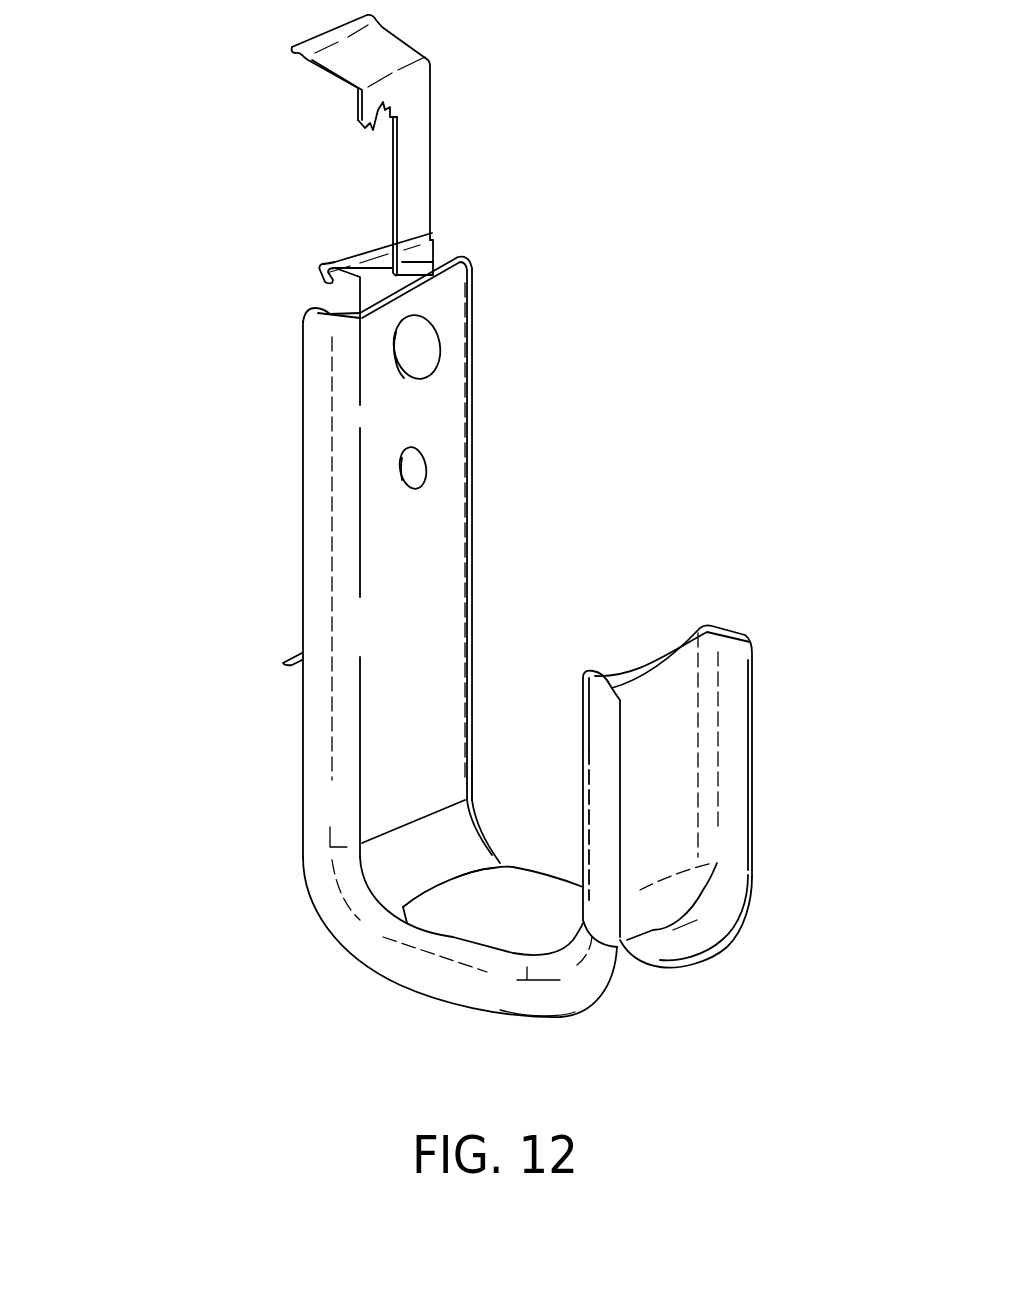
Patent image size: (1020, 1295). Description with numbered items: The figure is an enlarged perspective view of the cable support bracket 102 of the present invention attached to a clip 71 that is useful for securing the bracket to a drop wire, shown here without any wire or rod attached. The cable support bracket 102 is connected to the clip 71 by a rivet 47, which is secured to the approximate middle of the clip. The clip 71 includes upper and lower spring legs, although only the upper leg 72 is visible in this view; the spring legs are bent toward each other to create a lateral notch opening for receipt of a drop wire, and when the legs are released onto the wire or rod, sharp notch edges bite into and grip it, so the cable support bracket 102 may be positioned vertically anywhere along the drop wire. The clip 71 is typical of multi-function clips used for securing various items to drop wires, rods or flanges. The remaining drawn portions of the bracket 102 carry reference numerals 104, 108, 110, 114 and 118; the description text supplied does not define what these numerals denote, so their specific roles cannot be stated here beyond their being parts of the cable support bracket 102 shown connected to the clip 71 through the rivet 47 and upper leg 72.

The rivet 47 is at (405, 357).
The clip 71 is at (425, 164).
The upper leg 72 is at (445, 158).
The cable support bracket 102 is at (485, 681).
The vertical plate 104 is at (430, 558).
The upturned retaining plate 108 is at (777, 693).
The cable supporting saddle 110 is at (480, 912).
The curved bottom portion 114 is at (512, 995).
The cable receiving region 118 is at (518, 737).